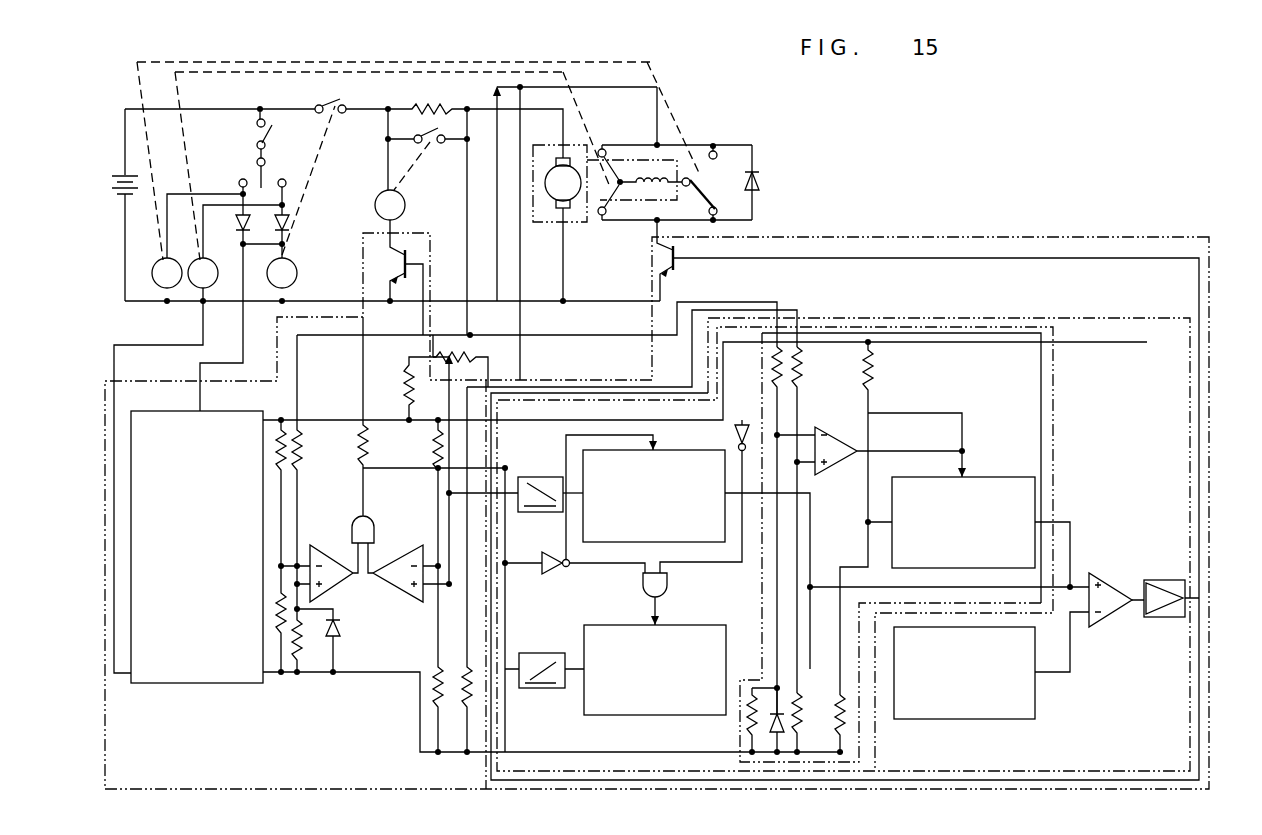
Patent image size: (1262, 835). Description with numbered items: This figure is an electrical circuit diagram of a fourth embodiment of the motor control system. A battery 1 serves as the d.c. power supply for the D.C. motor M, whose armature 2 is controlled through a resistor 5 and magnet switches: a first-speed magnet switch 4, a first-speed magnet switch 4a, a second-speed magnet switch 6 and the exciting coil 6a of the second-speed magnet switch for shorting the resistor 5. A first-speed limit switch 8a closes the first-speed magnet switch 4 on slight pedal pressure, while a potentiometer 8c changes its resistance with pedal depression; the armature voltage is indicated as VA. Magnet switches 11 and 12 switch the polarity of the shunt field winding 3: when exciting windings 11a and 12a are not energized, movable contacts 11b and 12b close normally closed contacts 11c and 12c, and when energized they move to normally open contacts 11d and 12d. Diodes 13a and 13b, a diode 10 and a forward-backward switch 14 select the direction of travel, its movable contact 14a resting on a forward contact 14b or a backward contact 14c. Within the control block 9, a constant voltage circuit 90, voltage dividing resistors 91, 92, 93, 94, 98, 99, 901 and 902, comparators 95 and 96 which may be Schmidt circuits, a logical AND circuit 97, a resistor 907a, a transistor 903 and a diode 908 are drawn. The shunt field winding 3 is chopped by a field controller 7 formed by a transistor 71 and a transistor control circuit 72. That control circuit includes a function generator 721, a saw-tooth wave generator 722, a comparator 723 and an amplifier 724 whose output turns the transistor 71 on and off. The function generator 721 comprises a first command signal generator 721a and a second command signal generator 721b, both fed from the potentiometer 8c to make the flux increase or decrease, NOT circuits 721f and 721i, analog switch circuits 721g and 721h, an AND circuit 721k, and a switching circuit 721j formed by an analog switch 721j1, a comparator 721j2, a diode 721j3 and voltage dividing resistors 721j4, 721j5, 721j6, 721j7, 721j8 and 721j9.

The battery 1 is at (112, 178).
The armature 2 is at (555, 212).
The shunt field winding 3 is at (660, 197).
The first-speed magnet switch 4 is at (316, 105).
The first-speed magnet switch 4a is at (296, 280).
The resistor 5 is at (410, 104).
The second-speed magnet switch 6 is at (426, 144).
The exciting coil 6a is at (405, 202).
The field controller 7 is at (1085, 236).
The first-speed limit switch 8a is at (257, 124).
The potentiometer 8c is at (478, 356).
The control circuit 9 is at (166, 380).
The diode 10 is at (757, 172).
The magnet switch 11 is at (730, 189).
The exciting winding 11a is at (154, 276).
The movable contact 11b is at (690, 180).
The normally closed contact 11c is at (727, 214).
The normally open contact 11d is at (708, 151).
The magnet switch 12 is at (592, 214).
The exciting winding 12a is at (208, 287).
The movable contact 12b is at (604, 150).
The normally closed contact 12c is at (604, 216).
The normally open contact 12d is at (594, 146).
The diode 13a is at (240, 232).
The diode 13b is at (292, 230).
The forward-backward switch 14 is at (252, 166).
The movable contact 14a is at (272, 147).
The forward contact 14b is at (239, 184).
The backward contact 14c is at (286, 180).
The transistor 71 is at (668, 272).
The transistor control circuit 72 is at (1075, 316).
The constant voltage circuit 90 is at (191, 683).
The voltage dividing resistor 91 is at (297, 470).
The voltage dividing resistor 92 is at (272, 645).
The voltage dividing resistor 93 is at (290, 435).
The voltage dividing resistor 94 is at (307, 645).
The comparator 95 is at (328, 588).
The comparator 96 is at (420, 591).
The logical AND circuit 97 is at (370, 534).
The voltage dividing resistor 98 is at (434, 460).
The voltage dividing resistor 99 is at (436, 684).
The D.C. motor M is at (545, 122).
The voltage VA is at (495, 193).
The voltage dividing resistor 901 is at (406, 388).
The voltage dividing resistor 902 is at (465, 700).
The transistor 903 is at (392, 264).
The resistor 907a is at (359, 426).
The diode 908 is at (338, 632).
The function generator 721 is at (1054, 390).
The first command signal generator 721a is at (546, 689).
The second command signal generator 721b is at (543, 477).
The NOT circuit 721f is at (556, 568).
The analog switch circuit 721g is at (631, 716).
The analog switch circuit 721h is at (583, 530).
The NOT circuit 721i is at (733, 436).
The switching circuit 721j is at (1043, 430).
The analog switch 721j1 is at (990, 474).
The comparator 721j2 is at (842, 466).
The diode 721j3 is at (775, 708).
The voltage dividing resistor 721j4 is at (798, 388).
The voltage dividing resistor 721j5 is at (742, 715).
The voltage dividing resistor 721j6 is at (783, 362).
The voltage dividing resistor 721j7 is at (789, 688).
The voltage dividing resistor 721j8 is at (872, 368).
The voltage dividing resistor 721j9 is at (846, 720).
The AND circuit 721k is at (644, 590).
The saw-tooth wave generator 722 is at (1035, 702).
The comparator 723 is at (1112, 622).
The amplifier 724 is at (1178, 618).